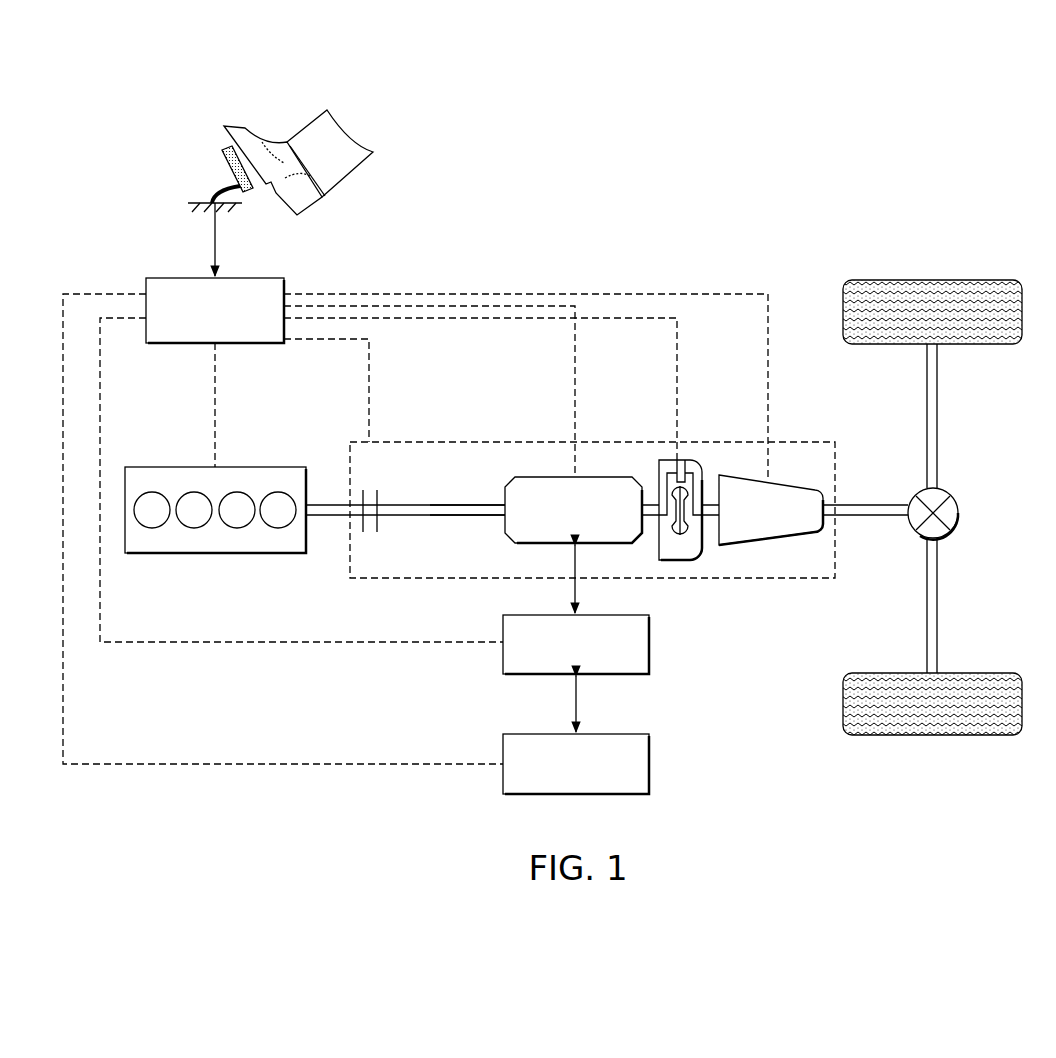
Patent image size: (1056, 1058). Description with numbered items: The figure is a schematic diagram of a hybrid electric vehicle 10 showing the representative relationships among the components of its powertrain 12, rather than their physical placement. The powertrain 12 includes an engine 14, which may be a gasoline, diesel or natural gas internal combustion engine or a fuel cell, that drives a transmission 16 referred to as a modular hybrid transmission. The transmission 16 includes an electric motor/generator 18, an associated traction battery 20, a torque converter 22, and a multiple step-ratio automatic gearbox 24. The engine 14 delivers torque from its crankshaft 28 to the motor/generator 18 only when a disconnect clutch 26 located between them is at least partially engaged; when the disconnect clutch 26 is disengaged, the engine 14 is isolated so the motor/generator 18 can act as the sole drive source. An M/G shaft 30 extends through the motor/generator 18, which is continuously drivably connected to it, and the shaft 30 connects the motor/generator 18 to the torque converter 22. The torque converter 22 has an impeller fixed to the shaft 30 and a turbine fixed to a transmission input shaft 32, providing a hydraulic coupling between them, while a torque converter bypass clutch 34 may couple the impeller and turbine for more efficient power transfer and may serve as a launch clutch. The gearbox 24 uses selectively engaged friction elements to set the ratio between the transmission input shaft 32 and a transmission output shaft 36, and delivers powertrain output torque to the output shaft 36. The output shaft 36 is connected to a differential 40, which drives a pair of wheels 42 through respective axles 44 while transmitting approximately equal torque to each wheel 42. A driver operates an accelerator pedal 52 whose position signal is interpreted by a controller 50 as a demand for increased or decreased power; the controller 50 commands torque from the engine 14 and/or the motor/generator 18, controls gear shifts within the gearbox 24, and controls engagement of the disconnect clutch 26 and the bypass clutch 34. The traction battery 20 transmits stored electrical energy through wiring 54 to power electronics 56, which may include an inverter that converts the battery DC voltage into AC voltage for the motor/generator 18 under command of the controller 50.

The hybrid electric vehicle 10 is at (683, 203).
The powertrain 12 is at (270, 682).
The engine 14 is at (175, 467).
The transmission 16 is at (637, 442).
The motor/generator 18 is at (545, 477).
The traction battery 20 is at (650, 765).
The torque converter 22 is at (680, 560).
The gearbox 24 is at (770, 538).
The disconnect clutch 26 is at (390, 490).
The crankshaft 28 is at (337, 505).
The M/G shaft 30 is at (466, 505).
The transmission input shaft 32 is at (710, 500).
The torque converter bypass clutch 34 is at (680, 470).
The transmission output shaft 36 is at (858, 505).
The differential 40 is at (960, 513).
The wheels 42 is at (932, 280).
The axles 44 is at (940, 418).
The controller 50 is at (178, 278).
The accelerator pedal 52 is at (223, 155).
The wiring 54 is at (578, 709).
The power electronics 56 is at (650, 645).